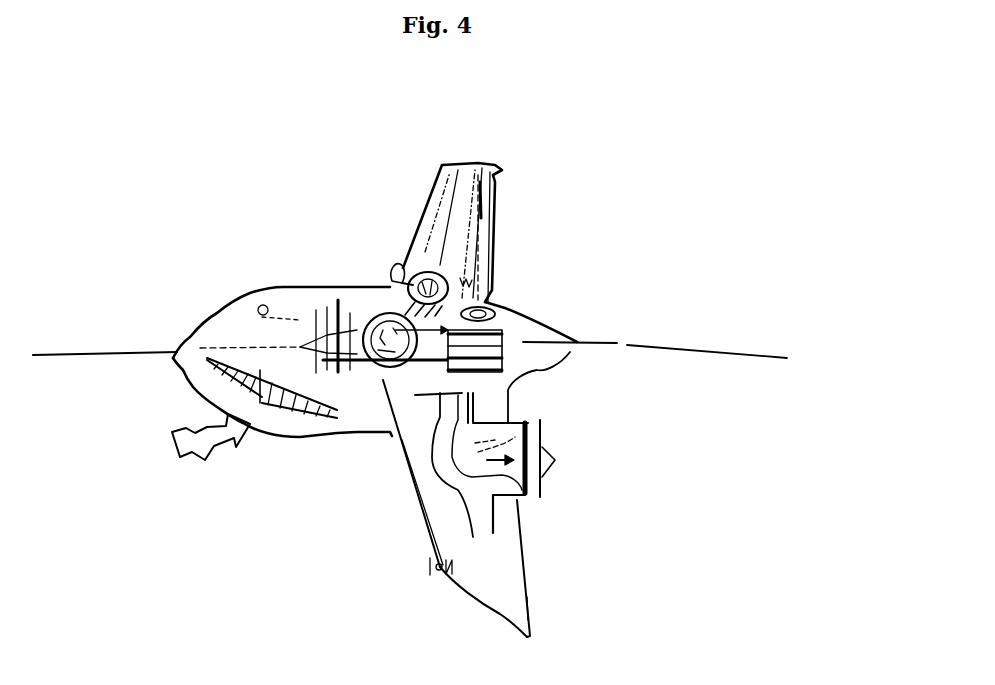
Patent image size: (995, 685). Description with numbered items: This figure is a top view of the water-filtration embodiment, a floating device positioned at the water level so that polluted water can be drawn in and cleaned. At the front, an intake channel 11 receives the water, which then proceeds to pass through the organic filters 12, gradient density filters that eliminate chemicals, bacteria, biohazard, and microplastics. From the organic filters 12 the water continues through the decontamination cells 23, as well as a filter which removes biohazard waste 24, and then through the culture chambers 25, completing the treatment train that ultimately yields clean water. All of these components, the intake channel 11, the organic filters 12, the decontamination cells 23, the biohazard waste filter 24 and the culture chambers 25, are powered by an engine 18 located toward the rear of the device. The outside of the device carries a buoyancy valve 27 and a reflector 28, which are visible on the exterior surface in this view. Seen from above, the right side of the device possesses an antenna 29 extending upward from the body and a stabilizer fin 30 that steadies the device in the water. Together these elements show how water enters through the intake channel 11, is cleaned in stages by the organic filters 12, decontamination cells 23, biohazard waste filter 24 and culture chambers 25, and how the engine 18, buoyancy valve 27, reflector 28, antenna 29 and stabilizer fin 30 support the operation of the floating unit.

The intake channel 11 is at (188, 445).
The organic filters 12 is at (347, 375).
The engine 18 is at (517, 465).
The decontamination cells 23 is at (384, 379).
The biohazard waste filter 24 is at (480, 162).
The culture chambers 25 is at (508, 357).
The buoyancy valve 27 is at (477, 295).
The reflector 28 is at (482, 205).
The antenna 29 is at (433, 198).
The stabilizer fin 30 is at (356, 302).